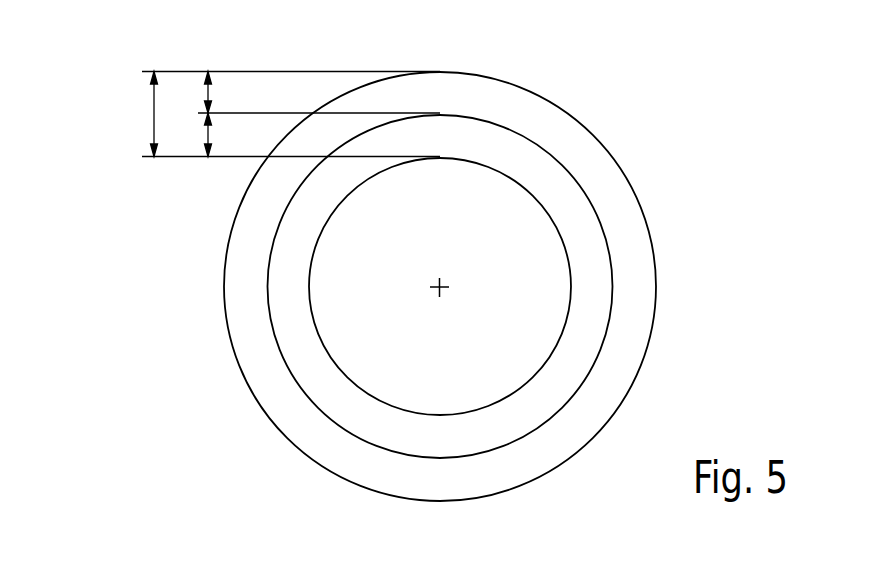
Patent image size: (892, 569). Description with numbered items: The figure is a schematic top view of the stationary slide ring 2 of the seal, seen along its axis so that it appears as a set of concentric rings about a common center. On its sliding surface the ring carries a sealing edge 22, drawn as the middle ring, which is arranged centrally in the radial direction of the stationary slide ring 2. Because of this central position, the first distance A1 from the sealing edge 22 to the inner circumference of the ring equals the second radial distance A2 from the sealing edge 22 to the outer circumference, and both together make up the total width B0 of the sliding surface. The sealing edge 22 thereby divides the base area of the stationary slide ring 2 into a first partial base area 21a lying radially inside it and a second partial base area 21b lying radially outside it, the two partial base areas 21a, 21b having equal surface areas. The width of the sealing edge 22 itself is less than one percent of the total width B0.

The stationary slide ring 2 is at (127, 225).
The sealing edge 22 is at (590, 195).
The second partial base area 21b is at (635, 241).
The first partial base area 21a is at (593, 294).
The first distance A1 is at (207, 134).
The second radial distance A2 is at (207, 92).
The total width B0 is at (150, 117).